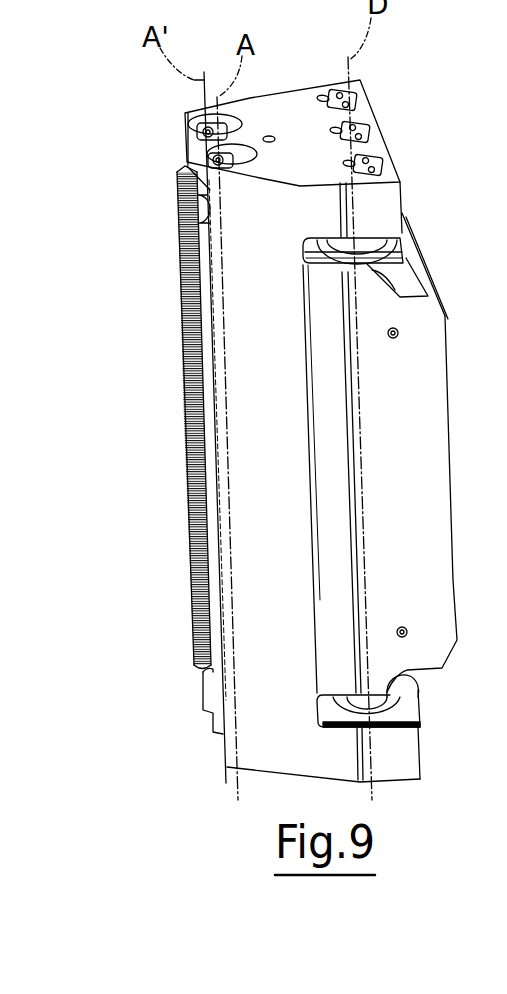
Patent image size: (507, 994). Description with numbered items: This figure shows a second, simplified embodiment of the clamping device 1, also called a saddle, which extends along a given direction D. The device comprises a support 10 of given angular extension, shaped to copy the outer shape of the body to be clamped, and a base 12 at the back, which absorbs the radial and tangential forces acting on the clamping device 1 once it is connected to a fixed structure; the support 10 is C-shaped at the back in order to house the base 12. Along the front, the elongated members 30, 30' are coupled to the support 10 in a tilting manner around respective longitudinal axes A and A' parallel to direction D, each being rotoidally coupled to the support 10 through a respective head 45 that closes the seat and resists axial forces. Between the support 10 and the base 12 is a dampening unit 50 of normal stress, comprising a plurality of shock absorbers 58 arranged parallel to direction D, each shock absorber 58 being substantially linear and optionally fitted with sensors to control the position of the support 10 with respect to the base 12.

The clamping device 1 is at (124, 93).
The support 10 is at (392, 206).
The base 12 is at (424, 487).
The elongated member 30 is at (142, 417).
The elongated member 30' is at (144, 296).
The head 45 is at (185, 137).
The dampening unit 50 is at (364, 249).
The shock absorber 58 is at (370, 266).